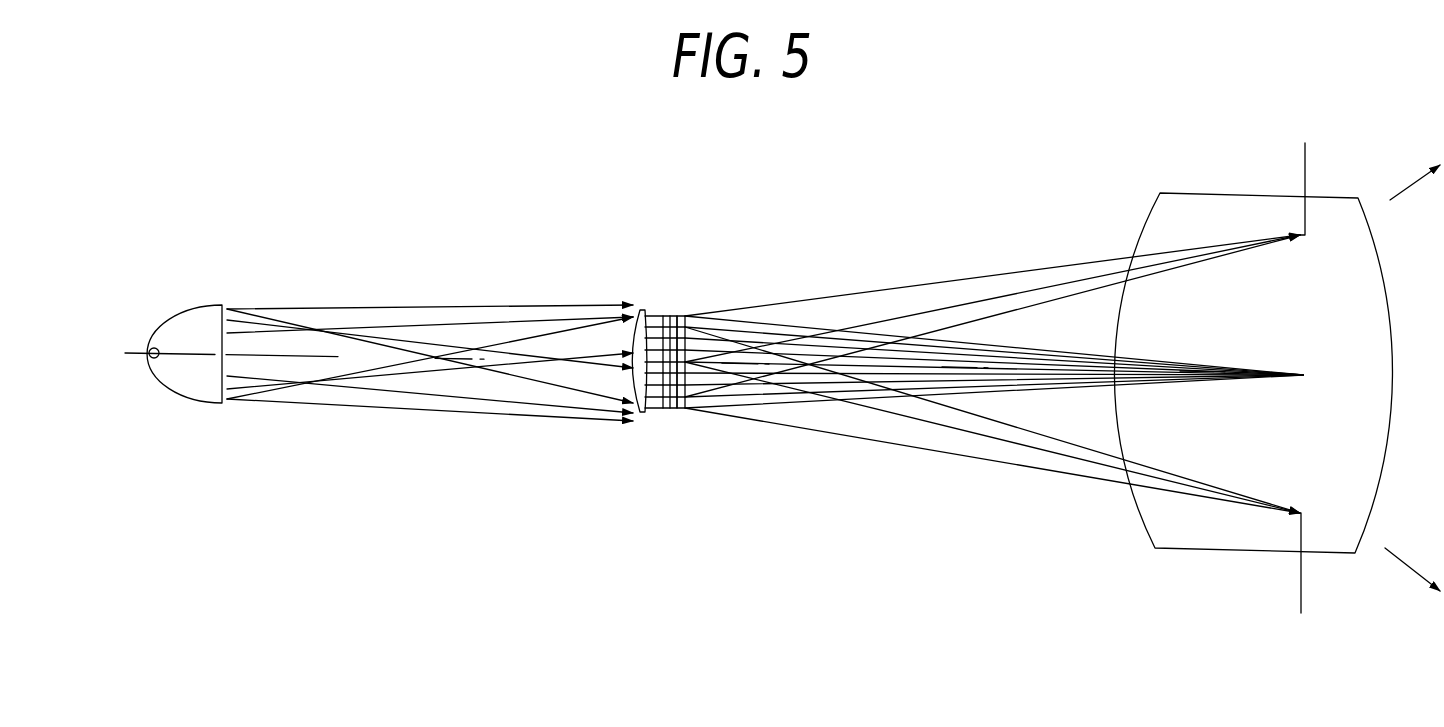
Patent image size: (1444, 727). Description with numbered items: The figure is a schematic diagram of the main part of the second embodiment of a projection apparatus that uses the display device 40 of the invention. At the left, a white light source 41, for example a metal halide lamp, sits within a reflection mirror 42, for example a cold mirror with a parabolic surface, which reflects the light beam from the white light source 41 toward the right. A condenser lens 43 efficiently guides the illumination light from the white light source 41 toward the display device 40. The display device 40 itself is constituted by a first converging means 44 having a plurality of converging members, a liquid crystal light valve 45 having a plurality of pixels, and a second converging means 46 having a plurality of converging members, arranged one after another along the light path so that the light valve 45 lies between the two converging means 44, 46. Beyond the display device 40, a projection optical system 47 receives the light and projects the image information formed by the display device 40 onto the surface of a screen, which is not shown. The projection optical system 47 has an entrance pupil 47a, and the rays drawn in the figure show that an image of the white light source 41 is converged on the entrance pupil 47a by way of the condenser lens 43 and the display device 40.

The display device 40 is at (742, 256).
The white light source 41 is at (155, 348).
The reflection mirror 42 is at (207, 305).
The condenser lens 43 is at (639, 308).
The first converging means 44 is at (650, 312).
The liquid crystal light valve 45 is at (672, 315).
The second converging means 46 is at (687, 315).
The projection optical system 47 is at (1190, 201).
The entrance pupil 47a is at (1305, 158).